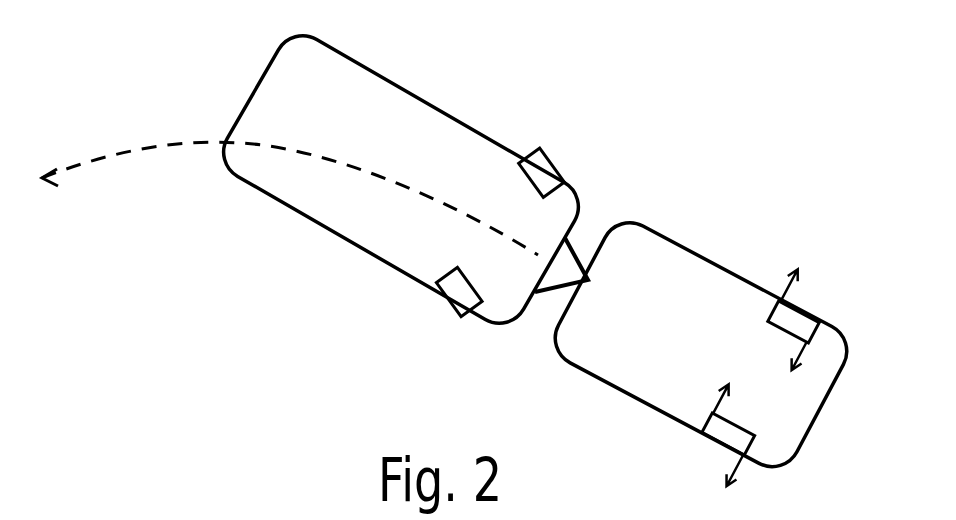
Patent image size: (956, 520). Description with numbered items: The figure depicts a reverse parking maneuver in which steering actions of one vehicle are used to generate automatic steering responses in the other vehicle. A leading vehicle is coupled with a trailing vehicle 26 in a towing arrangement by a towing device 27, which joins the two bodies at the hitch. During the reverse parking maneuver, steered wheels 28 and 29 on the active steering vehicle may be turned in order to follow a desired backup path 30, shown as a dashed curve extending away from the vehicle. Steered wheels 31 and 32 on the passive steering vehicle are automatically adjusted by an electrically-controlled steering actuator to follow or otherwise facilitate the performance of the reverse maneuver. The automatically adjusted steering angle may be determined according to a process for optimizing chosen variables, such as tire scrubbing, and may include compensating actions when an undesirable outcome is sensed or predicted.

The trailing vehicle 26 is at (400, 83).
The towing device 27 is at (582, 257).
The steered wheel 28 is at (453, 308).
The steered wheel 29 is at (535, 163).
The desired backup path 30 is at (105, 157).
The steered wheel 31 is at (807, 323).
The steered wheel 32 is at (712, 434).